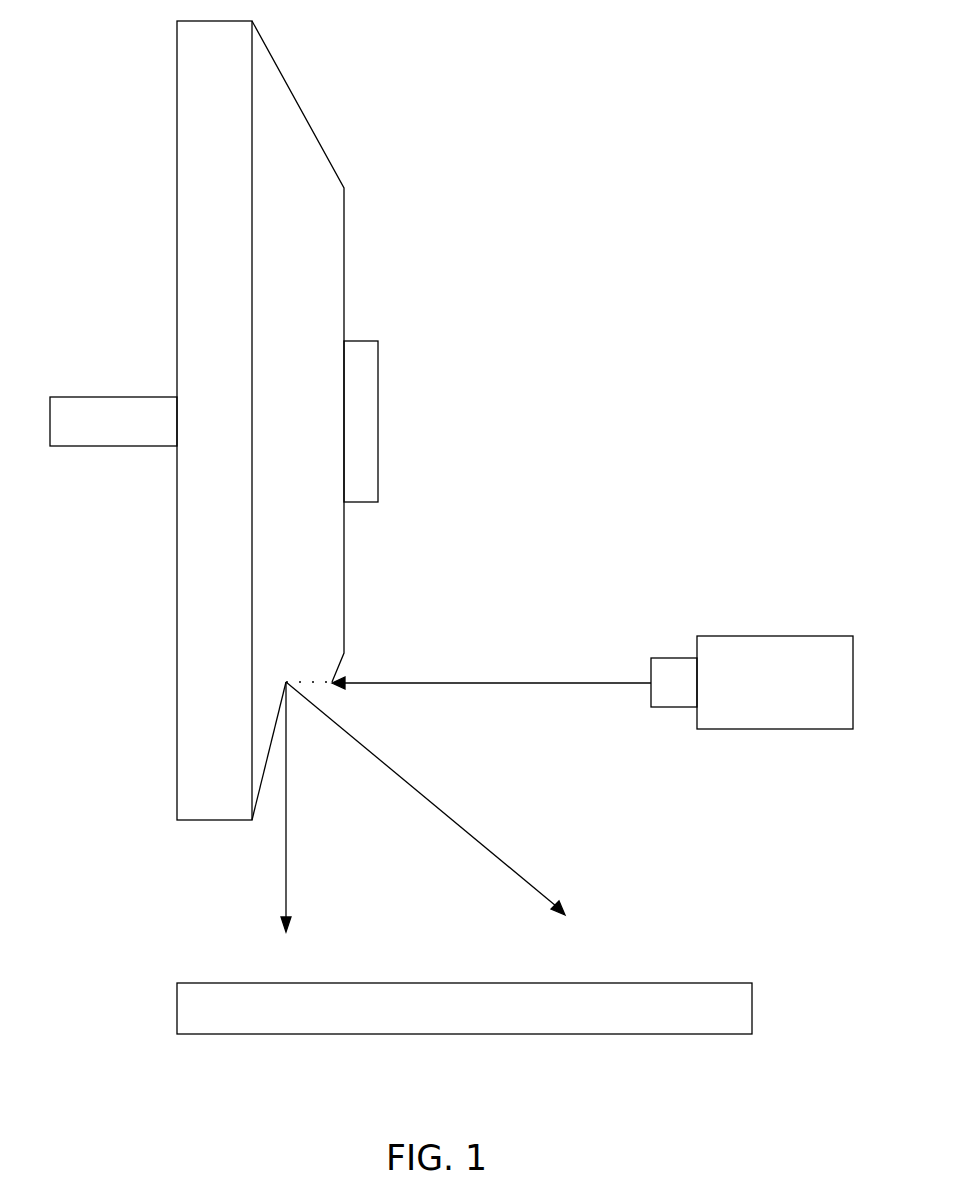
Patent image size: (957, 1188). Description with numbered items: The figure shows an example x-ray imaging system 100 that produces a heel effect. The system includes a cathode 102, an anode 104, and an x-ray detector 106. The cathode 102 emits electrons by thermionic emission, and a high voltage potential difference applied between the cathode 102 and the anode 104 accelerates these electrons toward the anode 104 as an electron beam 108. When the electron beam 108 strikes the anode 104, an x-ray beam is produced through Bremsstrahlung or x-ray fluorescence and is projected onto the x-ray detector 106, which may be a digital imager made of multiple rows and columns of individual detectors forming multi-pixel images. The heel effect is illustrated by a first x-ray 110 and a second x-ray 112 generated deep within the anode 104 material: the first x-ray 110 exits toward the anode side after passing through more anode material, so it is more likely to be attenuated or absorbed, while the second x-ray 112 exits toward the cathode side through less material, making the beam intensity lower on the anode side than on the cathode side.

The x-ray imaging system 100 is at (627, 95).
The cathode 102 is at (755, 636).
The anode 104 is at (344, 258).
The x-ray detector 106 is at (706, 983).
The electron beam 108 is at (536, 683).
The first x-ray 110 is at (286, 853).
The second x-ray 112 is at (460, 830).